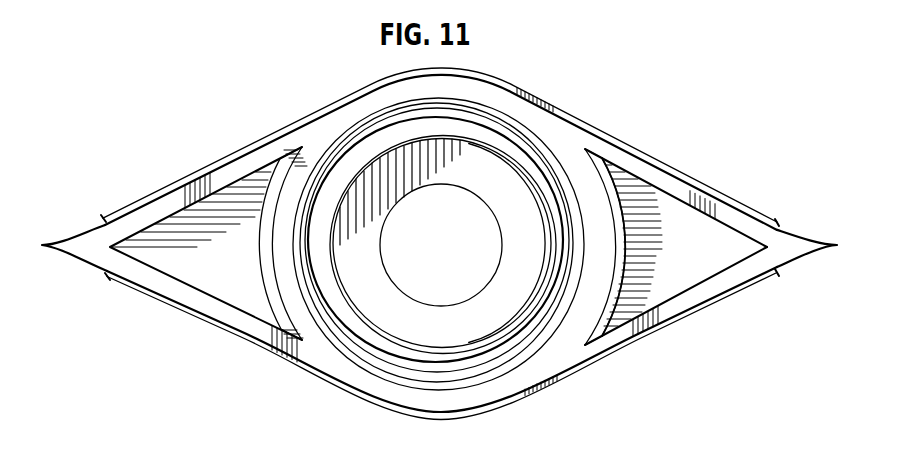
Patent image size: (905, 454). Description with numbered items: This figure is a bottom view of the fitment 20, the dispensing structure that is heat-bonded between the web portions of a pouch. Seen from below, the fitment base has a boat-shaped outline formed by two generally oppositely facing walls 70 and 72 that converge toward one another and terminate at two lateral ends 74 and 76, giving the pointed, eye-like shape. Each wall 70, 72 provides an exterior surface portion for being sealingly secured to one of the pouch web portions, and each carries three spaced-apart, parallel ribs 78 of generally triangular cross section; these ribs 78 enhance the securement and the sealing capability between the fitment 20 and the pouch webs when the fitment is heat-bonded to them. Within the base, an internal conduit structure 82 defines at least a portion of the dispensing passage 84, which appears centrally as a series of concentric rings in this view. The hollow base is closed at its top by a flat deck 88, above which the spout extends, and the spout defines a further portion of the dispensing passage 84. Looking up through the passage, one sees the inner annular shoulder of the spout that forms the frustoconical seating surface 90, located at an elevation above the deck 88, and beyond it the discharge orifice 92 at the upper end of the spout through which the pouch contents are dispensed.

The fitment 20 is at (648, 96).
The wall 70 is at (227, 173).
The wall 72 is at (228, 317).
The lateral end 74 is at (43, 244).
The lateral end 76 is at (838, 245).
The rib 78 is at (103, 218).
The internal conduit structure 82 is at (615, 212).
The dispensing passage 84 is at (405, 241).
The flat deck 88 is at (685, 280).
The frustoconical seating surface 90 is at (478, 128).
The discharge orifice 92 is at (498, 232).